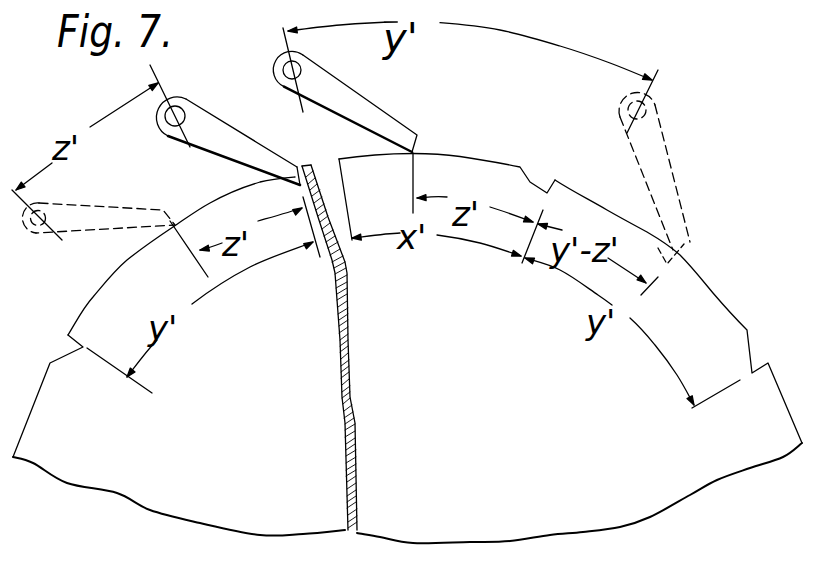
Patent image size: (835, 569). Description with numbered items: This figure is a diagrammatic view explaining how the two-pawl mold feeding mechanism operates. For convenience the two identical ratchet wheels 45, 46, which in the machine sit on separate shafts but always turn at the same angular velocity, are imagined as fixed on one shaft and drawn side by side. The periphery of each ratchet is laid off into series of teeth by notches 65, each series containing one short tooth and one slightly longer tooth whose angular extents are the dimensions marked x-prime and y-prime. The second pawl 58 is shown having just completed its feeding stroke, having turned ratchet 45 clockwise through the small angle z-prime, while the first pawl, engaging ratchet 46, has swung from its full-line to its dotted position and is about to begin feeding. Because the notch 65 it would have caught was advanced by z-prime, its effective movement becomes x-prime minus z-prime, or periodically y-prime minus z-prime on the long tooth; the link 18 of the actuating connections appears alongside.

The ratchet wheel 45 is at (185, 350).
The ratchet wheel 46 is at (570, 349).
The pawl 58 is at (192, 137).
The link arm 18 is at (620, 120).
The notch 65 is at (547, 193).